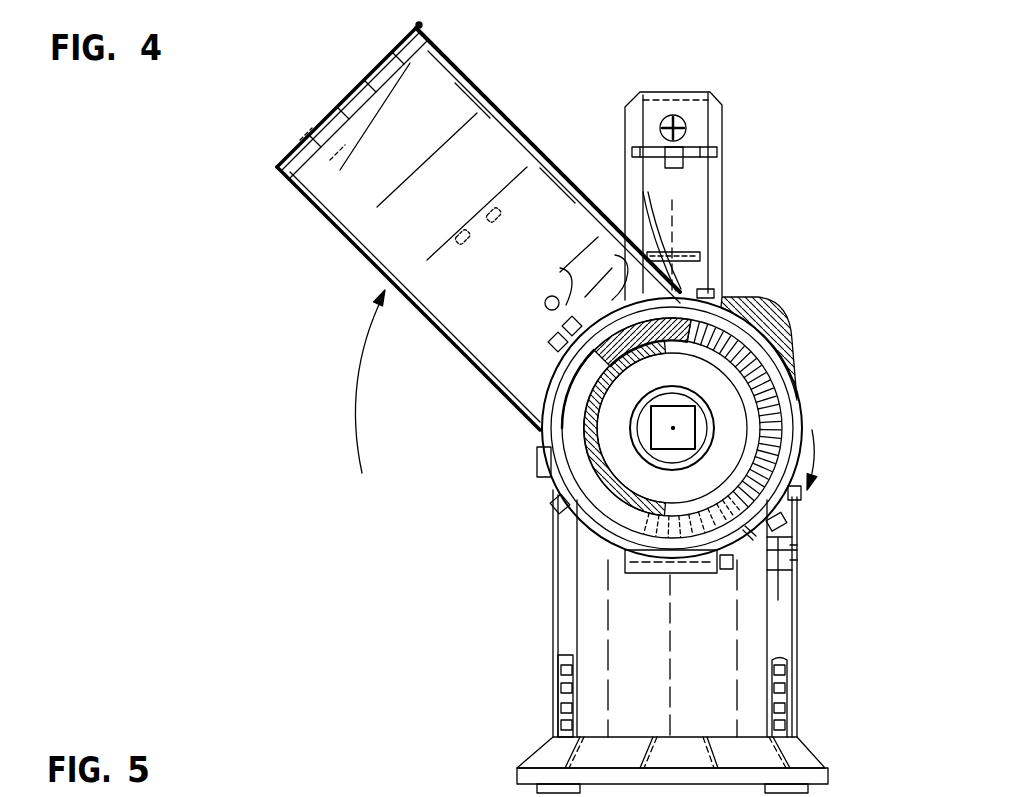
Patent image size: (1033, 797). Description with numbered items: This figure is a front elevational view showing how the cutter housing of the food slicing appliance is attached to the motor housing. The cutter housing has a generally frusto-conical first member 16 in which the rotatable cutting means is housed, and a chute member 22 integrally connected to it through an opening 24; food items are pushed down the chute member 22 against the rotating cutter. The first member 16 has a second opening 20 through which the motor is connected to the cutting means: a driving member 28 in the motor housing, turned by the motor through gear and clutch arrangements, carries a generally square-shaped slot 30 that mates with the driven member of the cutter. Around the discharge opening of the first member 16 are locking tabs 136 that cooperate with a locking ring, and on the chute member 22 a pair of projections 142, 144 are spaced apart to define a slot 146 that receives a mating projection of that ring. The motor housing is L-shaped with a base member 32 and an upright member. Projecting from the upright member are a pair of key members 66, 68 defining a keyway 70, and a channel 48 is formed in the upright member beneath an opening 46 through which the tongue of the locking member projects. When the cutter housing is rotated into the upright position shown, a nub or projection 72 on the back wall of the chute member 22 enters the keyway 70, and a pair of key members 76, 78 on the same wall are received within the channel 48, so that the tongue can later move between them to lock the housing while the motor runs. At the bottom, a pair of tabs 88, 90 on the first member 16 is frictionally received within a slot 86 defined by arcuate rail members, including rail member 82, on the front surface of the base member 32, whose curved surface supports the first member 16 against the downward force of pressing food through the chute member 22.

The first member 16 is at (583, 473).
The second opening 20 is at (635, 428).
The chute member 22 is at (327, 214).
The opening 24 is at (583, 400).
The driving member 28 is at (705, 430).
The square-shaped slot 30 is at (687, 413).
The base member 32 is at (590, 622).
The opening 46 is at (678, 150).
The channel 48 is at (719, 153).
The key member 66 is at (702, 257).
The key member 68 is at (645, 195).
The keyway 70 is at (677, 245).
The projection 72 is at (544, 304).
The key member 76 is at (500, 220).
The key member 78 is at (455, 236).
The arcuate rail member 82 is at (677, 573).
The slot 86 is at (733, 552).
The tab 88 is at (792, 552).
The tab 90 is at (802, 493).
The locking tab 136 is at (715, 296).
The projection 142 is at (548, 343).
The projection 144 is at (602, 268).
The slot 146 is at (562, 269).